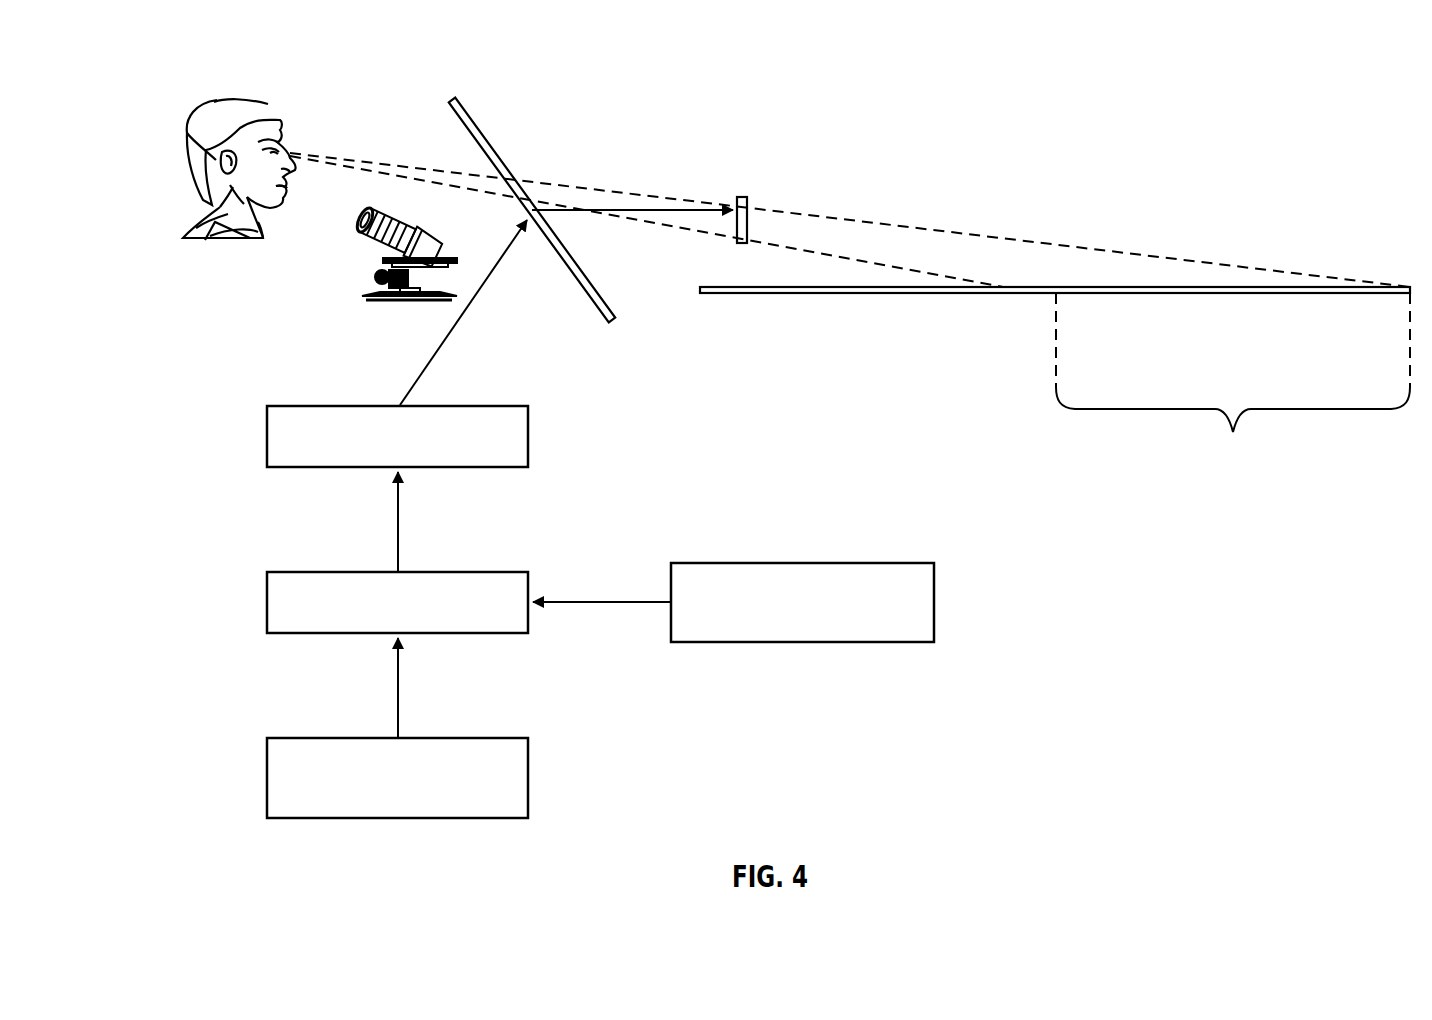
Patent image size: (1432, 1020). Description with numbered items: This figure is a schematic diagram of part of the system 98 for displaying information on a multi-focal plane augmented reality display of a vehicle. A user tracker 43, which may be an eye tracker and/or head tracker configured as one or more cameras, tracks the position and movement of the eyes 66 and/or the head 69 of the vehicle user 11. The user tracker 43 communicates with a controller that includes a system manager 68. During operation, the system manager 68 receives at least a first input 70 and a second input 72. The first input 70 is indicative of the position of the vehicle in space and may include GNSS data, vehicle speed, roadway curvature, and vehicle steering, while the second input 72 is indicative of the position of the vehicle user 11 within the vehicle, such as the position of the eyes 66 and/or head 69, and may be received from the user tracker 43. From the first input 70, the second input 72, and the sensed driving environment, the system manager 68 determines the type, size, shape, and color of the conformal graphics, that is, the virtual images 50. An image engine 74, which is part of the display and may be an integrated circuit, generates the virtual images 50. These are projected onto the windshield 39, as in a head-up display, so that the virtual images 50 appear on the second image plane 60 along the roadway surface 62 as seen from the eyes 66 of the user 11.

The vehicle user 11 is at (187, 157).
The head 69 is at (237, 98).
The eyes 66 is at (289, 193).
The user tracker 43 is at (362, 296).
The windshield 39 is at (462, 108).
The virtual image 50 is at (744, 197).
The roadway surface 62 is at (912, 294).
The second image plane 60 is at (1233, 381).
The system 98 is at (1138, 94).
The image engine 74 is at (530, 436).
The system manager 68 is at (530, 590).
The first input 70 is at (530, 777).
The second input 72 is at (936, 602).